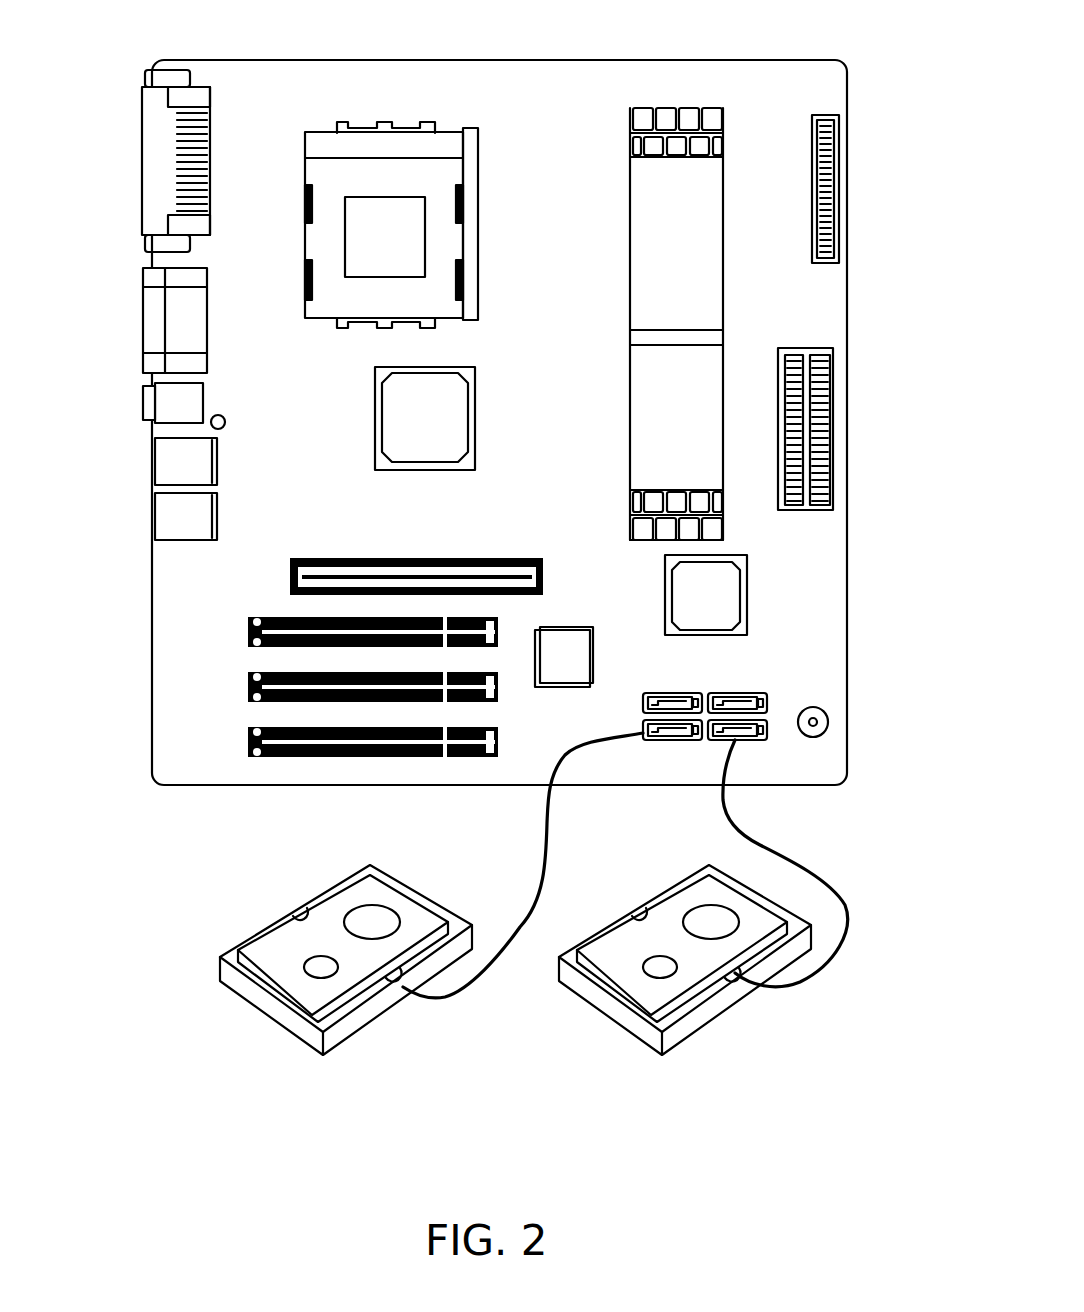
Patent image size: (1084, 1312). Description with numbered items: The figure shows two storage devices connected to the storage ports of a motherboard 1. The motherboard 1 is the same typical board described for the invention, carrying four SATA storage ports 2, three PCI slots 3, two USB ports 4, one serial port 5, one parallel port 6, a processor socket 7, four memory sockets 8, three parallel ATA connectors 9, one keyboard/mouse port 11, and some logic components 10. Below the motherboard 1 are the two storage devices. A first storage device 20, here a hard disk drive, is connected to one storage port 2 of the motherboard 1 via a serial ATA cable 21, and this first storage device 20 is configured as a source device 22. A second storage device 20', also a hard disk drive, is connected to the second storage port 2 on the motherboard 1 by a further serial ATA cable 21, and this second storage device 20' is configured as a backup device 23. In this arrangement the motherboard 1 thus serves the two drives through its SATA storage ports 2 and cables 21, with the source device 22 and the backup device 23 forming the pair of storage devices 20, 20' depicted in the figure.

The motherboard 1 is at (540, 108).
The SATA storage ports 2 is at (767, 703).
The PCI slots 3 is at (248, 732).
The USB ports 4 is at (153, 463).
The serial port 5 is at (168, 318).
The parallel port 6 is at (168, 158).
The processor socket 7 is at (365, 158).
The memory sockets 8 is at (717, 335).
The parallel ATA connectors 9 is at (834, 188).
The logic components 10 is at (713, 598).
The keyboard/mouse port 11 is at (147, 405).
The storage device 20 is at (341, 956).
The second storage device 20' is at (684, 981).
The serial ATA cable 21 is at (547, 833).
The source device 22 is at (222, 1000).
The backup device 23 is at (717, 1020).